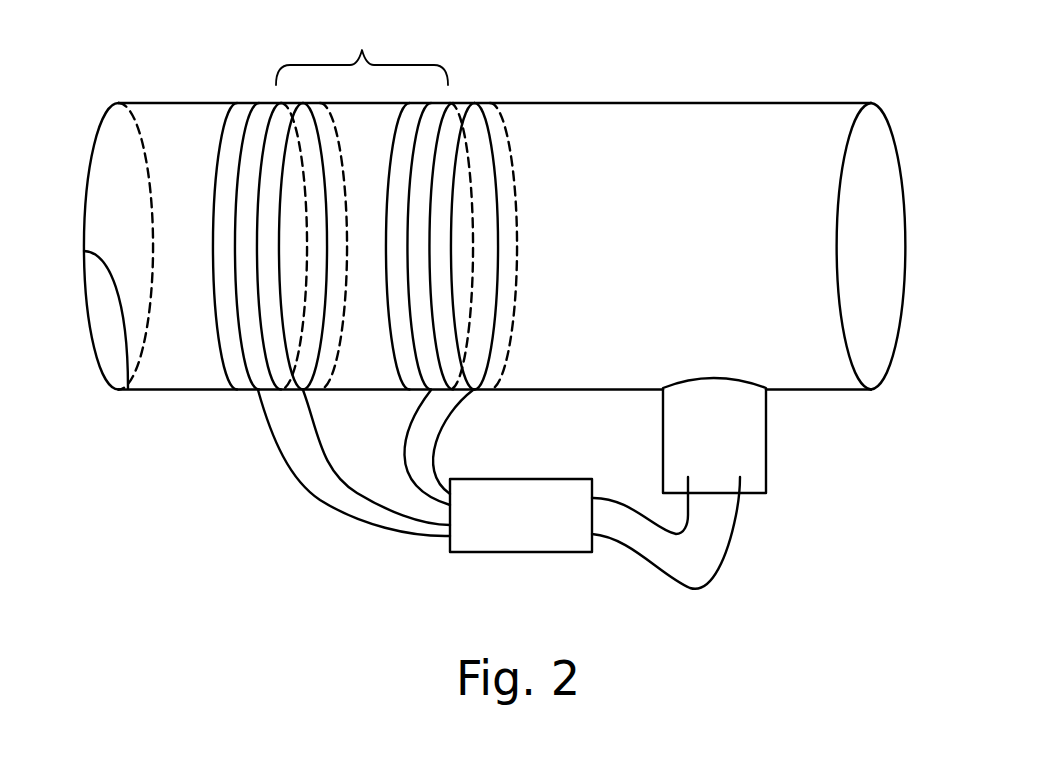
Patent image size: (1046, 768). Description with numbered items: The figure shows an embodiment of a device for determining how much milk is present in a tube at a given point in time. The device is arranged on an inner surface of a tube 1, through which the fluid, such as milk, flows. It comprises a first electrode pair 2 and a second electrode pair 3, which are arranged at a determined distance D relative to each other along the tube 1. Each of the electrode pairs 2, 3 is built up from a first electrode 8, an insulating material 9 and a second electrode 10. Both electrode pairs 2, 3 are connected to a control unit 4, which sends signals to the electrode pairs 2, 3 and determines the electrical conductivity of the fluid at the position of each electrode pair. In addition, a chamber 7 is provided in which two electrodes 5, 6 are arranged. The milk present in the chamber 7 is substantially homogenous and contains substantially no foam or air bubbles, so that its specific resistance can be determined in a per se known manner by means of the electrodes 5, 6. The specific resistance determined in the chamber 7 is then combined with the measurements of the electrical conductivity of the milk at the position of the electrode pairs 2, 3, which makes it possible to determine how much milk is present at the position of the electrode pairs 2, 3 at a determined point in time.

The tube 1 is at (128, 388).
The first electrode pair 2 is at (227, 185).
The second electrode pair 3 is at (452, 225).
The control unit 4 is at (520, 517).
The electrode 5 is at (688, 486).
The electrode 6 is at (740, 478).
The chamber 7 is at (733, 442).
The first electrode 8 is at (252, 390).
The insulating material 9 is at (272, 390).
The second electrode 10 is at (318, 447).
The determined distance D is at (362, 46).